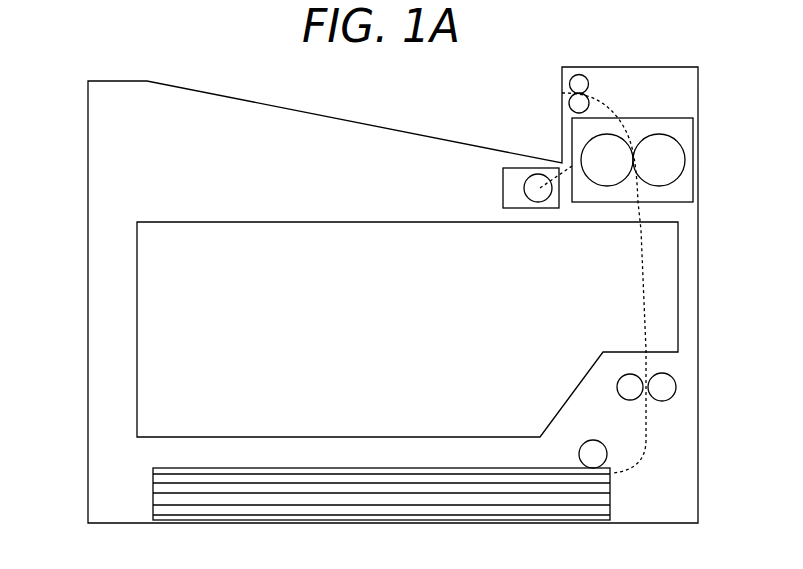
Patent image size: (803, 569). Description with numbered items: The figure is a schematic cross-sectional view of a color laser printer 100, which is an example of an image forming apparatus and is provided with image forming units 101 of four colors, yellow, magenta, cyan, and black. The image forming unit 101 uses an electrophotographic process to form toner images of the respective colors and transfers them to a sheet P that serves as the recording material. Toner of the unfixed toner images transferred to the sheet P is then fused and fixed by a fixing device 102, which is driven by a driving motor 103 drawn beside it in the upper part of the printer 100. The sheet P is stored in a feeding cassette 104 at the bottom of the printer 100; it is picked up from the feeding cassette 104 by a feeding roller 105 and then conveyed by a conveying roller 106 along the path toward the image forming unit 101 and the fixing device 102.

The color laser printer 100 is at (602, 53).
The image forming unit 101 is at (668, 248).
The fixing device 102 is at (680, 192).
The driving motor 103 is at (510, 192).
The feeding cassette 104 is at (153, 487).
The feeding roller 105 is at (592, 441).
The conveying roller 106 is at (668, 381).
The sheet P is at (372, 497).